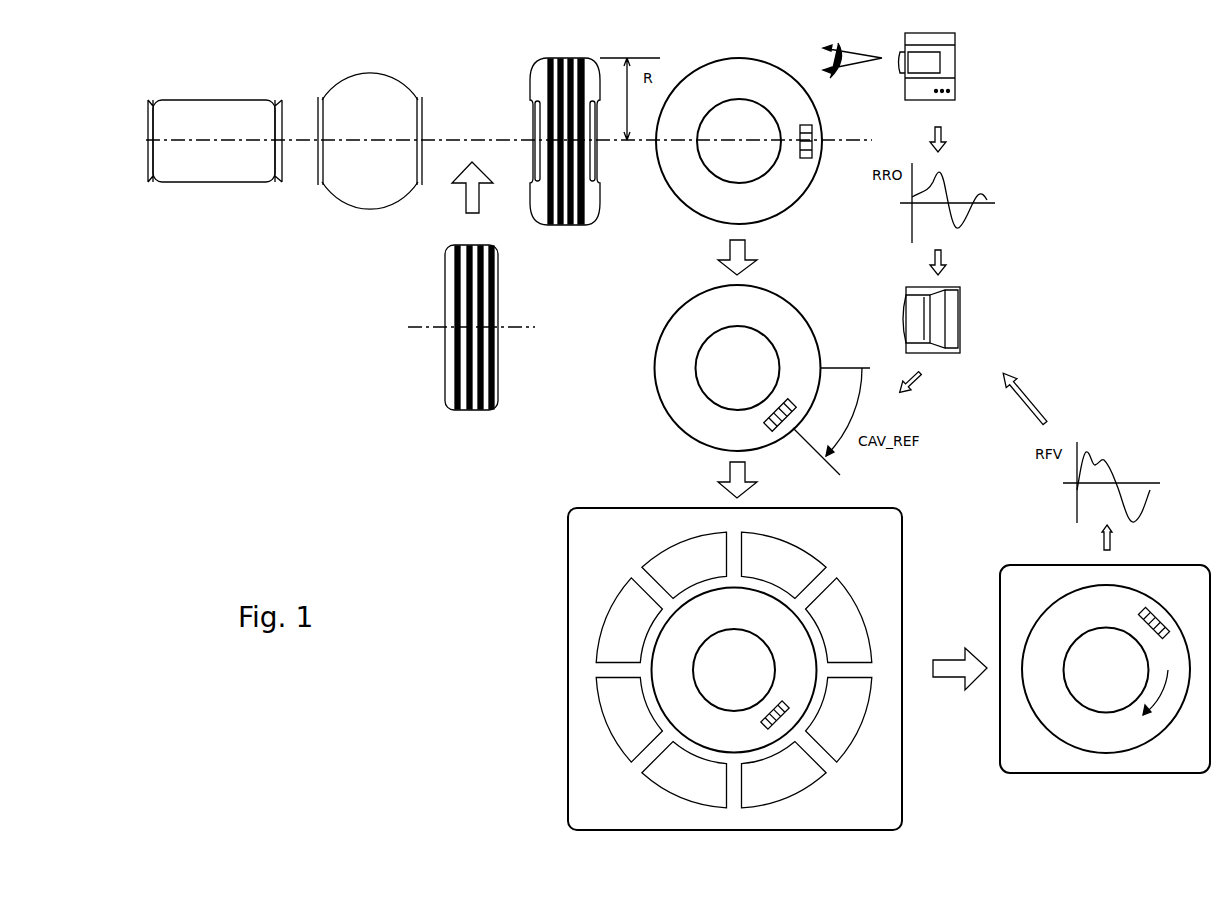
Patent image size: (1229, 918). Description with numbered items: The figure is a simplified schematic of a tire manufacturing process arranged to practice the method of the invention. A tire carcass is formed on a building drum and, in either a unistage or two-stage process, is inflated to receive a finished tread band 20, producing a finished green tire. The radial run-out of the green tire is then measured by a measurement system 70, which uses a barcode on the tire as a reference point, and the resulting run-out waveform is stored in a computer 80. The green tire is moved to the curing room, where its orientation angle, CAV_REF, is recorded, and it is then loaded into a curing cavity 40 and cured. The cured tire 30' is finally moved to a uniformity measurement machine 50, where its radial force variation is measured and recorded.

The tread band 20 is at (479, 335).
The cured tire 30' is at (1106, 669).
The curing cavity 40 is at (617, 556).
The uniformity measurement machine 50 is at (1042, 596).
The measurement system 70 is at (927, 66).
The computer 80 is at (931, 320).